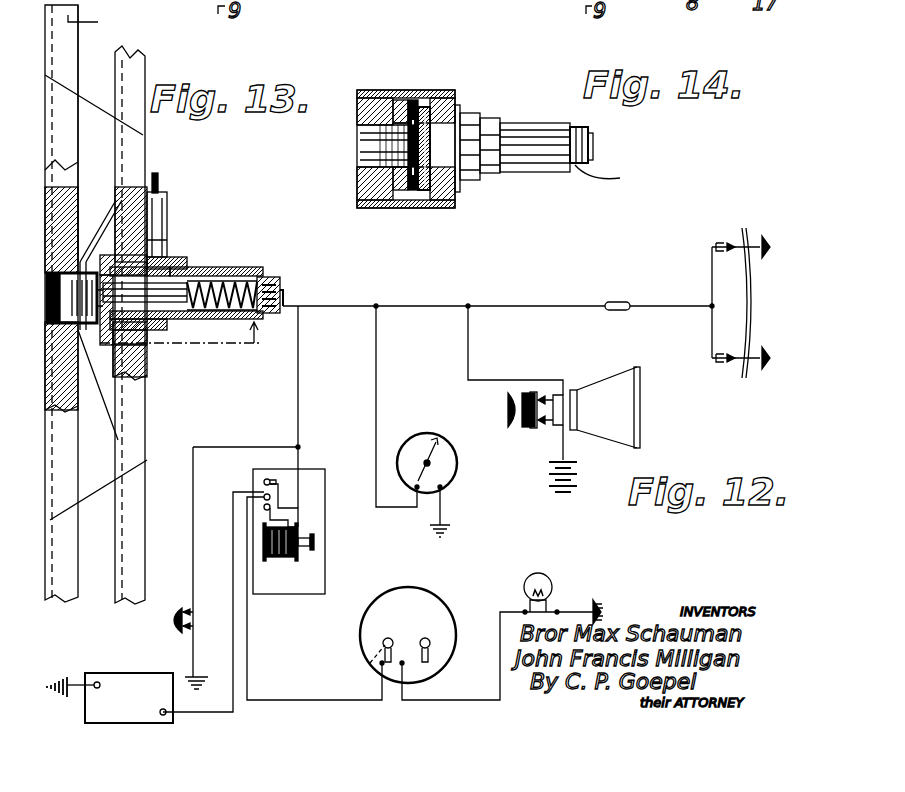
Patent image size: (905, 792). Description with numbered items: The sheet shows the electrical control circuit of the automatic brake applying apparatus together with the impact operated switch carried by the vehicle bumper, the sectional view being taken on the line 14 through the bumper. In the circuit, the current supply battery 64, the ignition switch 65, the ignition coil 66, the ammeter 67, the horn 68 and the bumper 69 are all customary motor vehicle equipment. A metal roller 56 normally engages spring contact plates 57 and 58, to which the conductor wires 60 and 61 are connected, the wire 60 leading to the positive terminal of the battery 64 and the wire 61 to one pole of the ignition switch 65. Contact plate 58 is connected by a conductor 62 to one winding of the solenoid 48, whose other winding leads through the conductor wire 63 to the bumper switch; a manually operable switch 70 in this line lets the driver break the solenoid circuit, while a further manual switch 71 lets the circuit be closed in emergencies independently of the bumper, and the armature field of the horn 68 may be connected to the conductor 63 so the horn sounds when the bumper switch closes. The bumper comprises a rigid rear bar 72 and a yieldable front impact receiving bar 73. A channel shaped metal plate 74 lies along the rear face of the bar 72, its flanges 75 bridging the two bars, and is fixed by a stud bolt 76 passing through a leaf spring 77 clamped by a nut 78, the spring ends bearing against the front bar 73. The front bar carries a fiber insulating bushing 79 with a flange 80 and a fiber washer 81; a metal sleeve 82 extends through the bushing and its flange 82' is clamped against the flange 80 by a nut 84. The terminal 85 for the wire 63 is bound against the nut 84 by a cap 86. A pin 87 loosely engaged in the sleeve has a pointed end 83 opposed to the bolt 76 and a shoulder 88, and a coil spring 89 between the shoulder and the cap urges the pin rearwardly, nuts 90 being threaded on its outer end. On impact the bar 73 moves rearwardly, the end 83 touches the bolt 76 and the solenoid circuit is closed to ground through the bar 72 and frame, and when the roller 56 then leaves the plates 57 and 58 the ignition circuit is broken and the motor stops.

In FIG. 13, the section line 14 is at (157, 323).
In FIG. 12, the solenoid 48 is at (318, 543).
In FIG. 12, the metal roller 56 is at (262, 482).
In FIG. 12, the spring contact plate 57 is at (268, 479).
In FIG. 12, the spring contact plate 58 is at (278, 497).
In FIG. 12, the conductor wire 60 is at (248, 492).
In FIG. 12, the conductor wire 61 is at (265, 508).
In FIG. 12, the conductor 62 is at (292, 527).
In FIG. 12, the conductor wire 63 is at (300, 463).
In FIG. 12, the current supply battery 64 is at (110, 698).
In FIG. 12, the ignition switch 65 is at (416, 615).
In FIG. 12, the ignition coil 66 is at (548, 582).
In FIG. 12, the ammeter 67 is at (455, 470).
In FIG. 12, the horn 68 is at (620, 405).
In FIG. 12, the bumper 69 is at (752, 293).
In FIG. 12, the manually operable switch 70 is at (622, 302).
In FIG. 12, the manually operable switch 71 is at (190, 620).
In FIG. 13, the rear bumper bar 72 is at (96, 133).
In FIG. 14, the rear bumper bar 72 is at (375, 106).
In FIG. 13, the front impact receiving bar 73 is at (130, 60).
In FIG. 14, the front impact receiving bar 73 is at (450, 100).
In FIG. 13, the channel shaped metal plate 74 is at (48, 185).
In FIG. 14, the channel shaped metal plate 74 is at (360, 197).
In FIG. 13, the flanges 75 is at (88, 118).
In FIG. 14, the flanges 75 is at (430, 112).
In FIG. 13, the stud bolt 76 is at (78, 212).
In FIG. 14, the stud bolt 76 is at (366, 149).
In FIG. 13, the leaf spring 77 is at (140, 405).
In FIG. 14, the leaf spring 77 is at (405, 105).
In FIG. 13, the nut 78 is at (135, 200).
In FIG. 14, the nut 78 is at (402, 200).
In FIG. 13, the fiber insulating bushing 79 is at (150, 358).
In FIG. 14, the fiber insulating bushing 79 is at (445, 205).
In FIG. 13, the flange 80 is at (158, 195).
In FIG. 14, the flange 80 is at (425, 105).
In FIG. 13, the fiber washer 81 is at (160, 348).
In FIG. 14, the fiber washer 81 is at (465, 130).
In FIG. 13, the metal sleeve 82 is at (175, 243).
In FIG. 13, the sleeve flange 82' is at (184, 373).
In FIG. 14, the sleeve flange 82' is at (421, 87).
In FIG. 13, the pointed end 83 is at (167, 235).
In FIG. 14, the pointed end 83 is at (412, 210).
In FIG. 13, the nut 84 is at (180, 262).
In FIG. 14, the nut 84 is at (488, 137).
In FIG. 13, the terminal 85 is at (170, 328).
In FIG. 14, the terminal 85 is at (540, 135).
In FIG. 13, the cap 86 is at (235, 280).
In FIG. 14, the cap 86 is at (582, 132).
In FIG. 13, the pin 87 is at (187, 278).
In FIG. 13, the shoulder 88 is at (230, 272).
In FIG. 13, the coil spring 89 is at (270, 275).
In FIG. 13, the nuts 90 is at (300, 264).
In FIG. 14, the nuts 90 is at (615, 179).